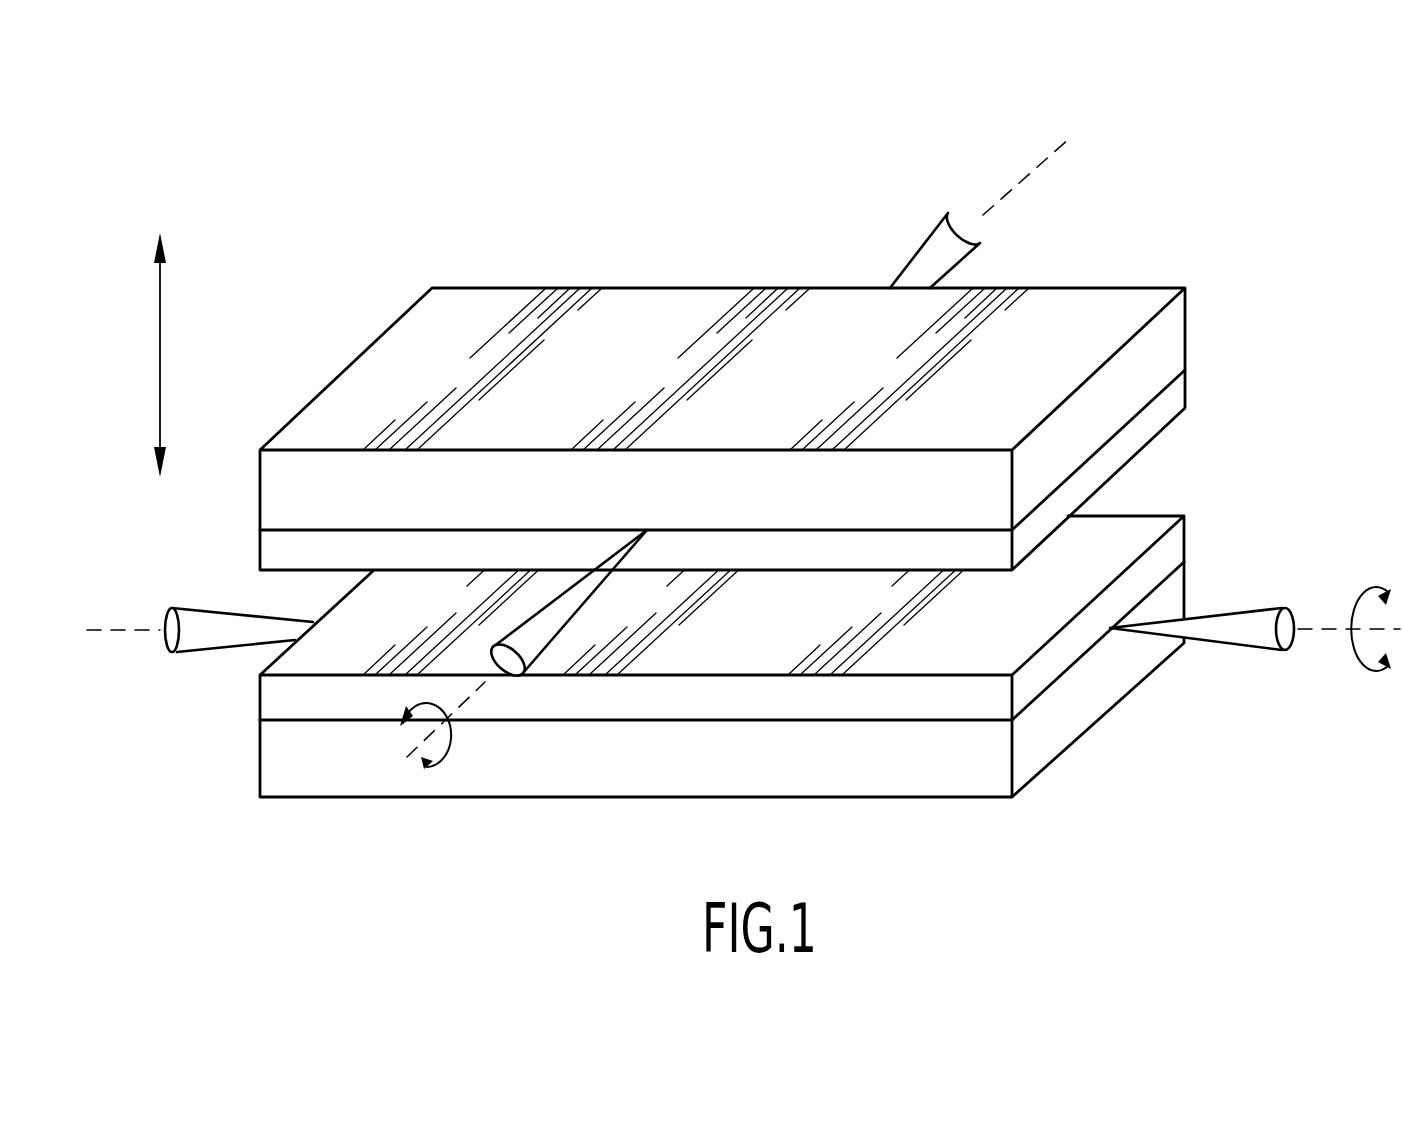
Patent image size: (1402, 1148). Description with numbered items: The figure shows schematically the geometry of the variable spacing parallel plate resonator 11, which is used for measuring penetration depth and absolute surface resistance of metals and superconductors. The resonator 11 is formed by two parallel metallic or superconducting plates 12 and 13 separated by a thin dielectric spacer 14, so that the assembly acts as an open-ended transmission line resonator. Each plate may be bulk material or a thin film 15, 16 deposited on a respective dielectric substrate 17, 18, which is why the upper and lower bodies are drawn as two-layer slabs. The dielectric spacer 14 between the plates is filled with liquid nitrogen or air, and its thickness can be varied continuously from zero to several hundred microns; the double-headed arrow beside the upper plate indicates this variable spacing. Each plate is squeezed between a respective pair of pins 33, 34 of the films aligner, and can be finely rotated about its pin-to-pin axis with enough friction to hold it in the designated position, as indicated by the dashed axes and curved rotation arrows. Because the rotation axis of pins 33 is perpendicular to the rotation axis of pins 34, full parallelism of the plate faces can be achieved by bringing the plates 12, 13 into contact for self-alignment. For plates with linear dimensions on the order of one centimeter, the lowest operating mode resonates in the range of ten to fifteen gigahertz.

The variable spacing parallel plate resonator 11 is at (1200, 214).
The plate 12 is at (312, 350).
The plate 13 is at (242, 759).
The dielectric spacer 14 is at (1140, 527).
The thin film 15 is at (1177, 398).
The thin film 16 is at (846, 702).
The dielectric substrate 17 is at (1078, 303).
The dielectric substrate 18 is at (1045, 733).
The pins 33 is at (918, 248).
The pins 34 is at (195, 645).